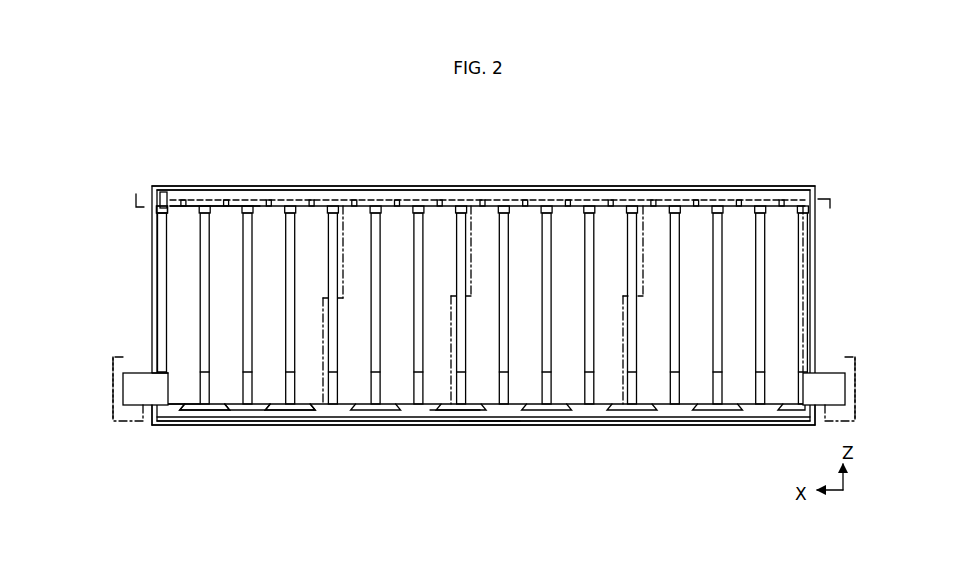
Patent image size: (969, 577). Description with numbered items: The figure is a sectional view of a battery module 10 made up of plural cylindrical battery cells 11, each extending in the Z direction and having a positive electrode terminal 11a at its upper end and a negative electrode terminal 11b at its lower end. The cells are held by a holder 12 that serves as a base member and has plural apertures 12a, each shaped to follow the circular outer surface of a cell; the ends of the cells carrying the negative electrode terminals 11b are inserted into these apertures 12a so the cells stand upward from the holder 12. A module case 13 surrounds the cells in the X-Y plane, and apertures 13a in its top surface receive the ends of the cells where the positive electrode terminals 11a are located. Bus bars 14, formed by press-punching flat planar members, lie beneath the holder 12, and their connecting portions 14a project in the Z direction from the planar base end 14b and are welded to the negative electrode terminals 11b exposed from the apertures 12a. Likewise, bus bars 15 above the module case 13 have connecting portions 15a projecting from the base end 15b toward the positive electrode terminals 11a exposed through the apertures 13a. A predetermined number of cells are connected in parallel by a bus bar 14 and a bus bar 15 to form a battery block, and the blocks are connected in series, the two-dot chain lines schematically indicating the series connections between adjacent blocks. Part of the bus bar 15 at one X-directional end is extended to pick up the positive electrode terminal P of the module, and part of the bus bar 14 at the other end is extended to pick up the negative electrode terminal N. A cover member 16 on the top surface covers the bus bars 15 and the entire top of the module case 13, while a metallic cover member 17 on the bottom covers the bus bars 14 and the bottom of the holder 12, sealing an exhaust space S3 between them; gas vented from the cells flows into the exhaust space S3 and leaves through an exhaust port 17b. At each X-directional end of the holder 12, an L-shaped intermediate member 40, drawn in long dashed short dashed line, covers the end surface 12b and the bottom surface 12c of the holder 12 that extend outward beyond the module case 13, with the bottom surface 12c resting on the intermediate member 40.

The battery module 10 is at (758, 182).
The battery cell 11 is at (172, 320).
The positive electrode terminal 11a is at (176, 208).
The negative electrode terminal 11b is at (188, 407).
The holder 12 is at (138, 373).
The aperture 12a is at (164, 372).
The end surface 12b is at (120, 383).
The bottom surface 12c is at (150, 418).
The module case 13 is at (150, 238).
The aperture 13a is at (165, 200).
The bus bar 14 is at (288, 412).
The connecting portion 14a is at (197, 411).
The base end 14b is at (268, 412).
The bus bar 15 is at (254, 200).
The connecting portion 15a is at (183, 200).
The base end 15b is at (250, 205).
The cover member 16 is at (613, 187).
The cover member 17 is at (612, 425).
The exhaust port 17b is at (488, 421).
The intermediate member 40 is at (114, 425).
The positive electrode terminal P is at (139, 192).
The negative electrode terminal N is at (823, 199).
The exhaust space S3 is at (455, 411).